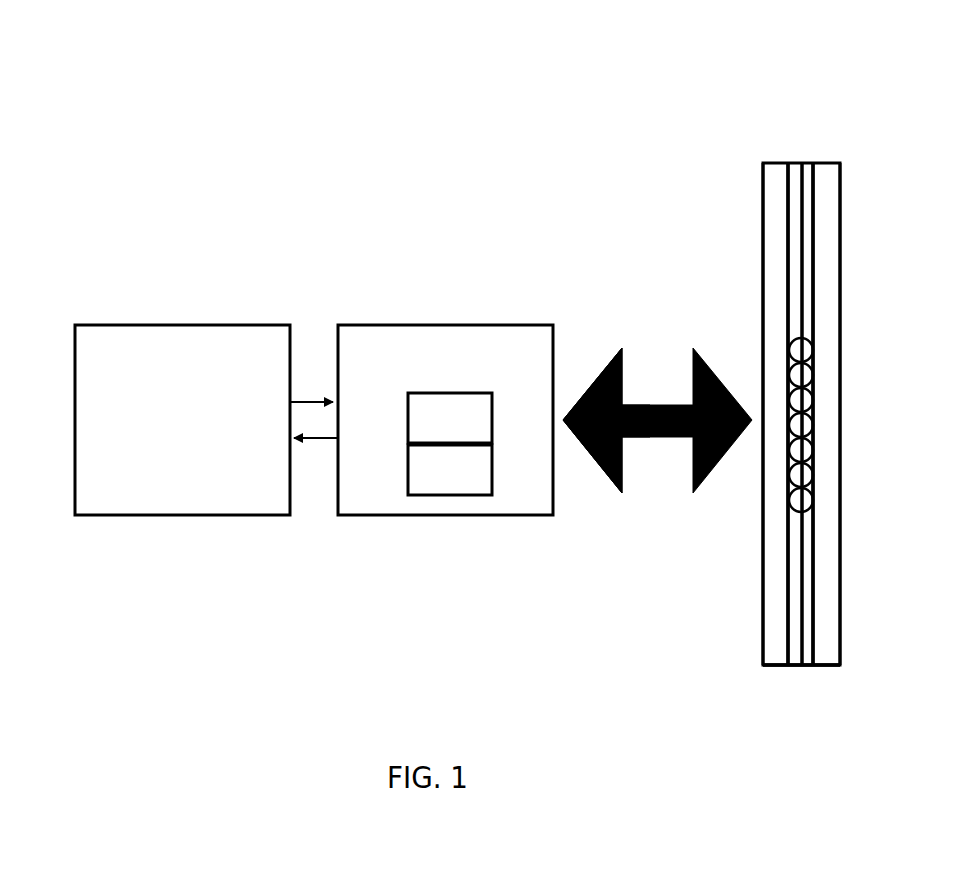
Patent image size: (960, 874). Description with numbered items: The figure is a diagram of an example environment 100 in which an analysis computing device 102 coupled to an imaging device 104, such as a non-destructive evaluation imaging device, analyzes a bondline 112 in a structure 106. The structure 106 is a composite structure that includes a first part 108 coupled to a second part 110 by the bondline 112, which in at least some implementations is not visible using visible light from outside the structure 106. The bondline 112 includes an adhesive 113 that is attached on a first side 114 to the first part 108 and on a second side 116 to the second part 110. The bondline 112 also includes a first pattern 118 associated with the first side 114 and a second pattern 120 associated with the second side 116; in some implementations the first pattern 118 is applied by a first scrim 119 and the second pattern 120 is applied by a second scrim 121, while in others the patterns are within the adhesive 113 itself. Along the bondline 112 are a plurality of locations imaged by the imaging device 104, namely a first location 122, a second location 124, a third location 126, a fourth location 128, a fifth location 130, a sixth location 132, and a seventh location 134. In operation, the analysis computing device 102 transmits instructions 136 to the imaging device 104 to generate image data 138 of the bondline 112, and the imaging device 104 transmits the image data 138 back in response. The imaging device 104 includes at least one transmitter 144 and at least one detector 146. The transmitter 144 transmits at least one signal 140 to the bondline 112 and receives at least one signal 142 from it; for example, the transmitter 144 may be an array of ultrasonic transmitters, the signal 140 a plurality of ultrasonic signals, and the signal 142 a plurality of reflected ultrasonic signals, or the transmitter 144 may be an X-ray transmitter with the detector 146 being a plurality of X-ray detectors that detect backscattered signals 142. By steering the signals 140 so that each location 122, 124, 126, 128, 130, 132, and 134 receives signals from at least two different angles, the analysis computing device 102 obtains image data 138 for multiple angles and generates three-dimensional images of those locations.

The environment 100 is at (134, 170).
The analysis computing device 102 is at (210, 438).
The imaging device 104 is at (473, 374).
The structure 106 is at (832, 127).
The first part 108 is at (762, 188).
The second part 110 is at (841, 196).
The bondline 112 is at (813, 683).
The adhesive 113 is at (798, 668).
The first side 114 is at (788, 668).
The second side 116 is at (815, 668).
The first pattern 118 is at (788, 615).
The first scrim 119 is at (788, 568).
The second pattern 120 is at (817, 612).
The second scrim 121 is at (817, 565).
The first location 122 is at (806, 341).
The second location 124 is at (806, 366).
The third location 126 is at (806, 391).
The fourth location 128 is at (806, 416).
The fifth location 130 is at (806, 441).
The sixth location 132 is at (806, 466).
The seventh location 134 is at (806, 491).
The instructions 136 is at (314, 398).
The image data 138 is at (313, 441).
The signal 140 is at (700, 353).
The signal 142 is at (613, 353).
The transmitter 144 is at (468, 432).
The detector 146 is at (468, 482).